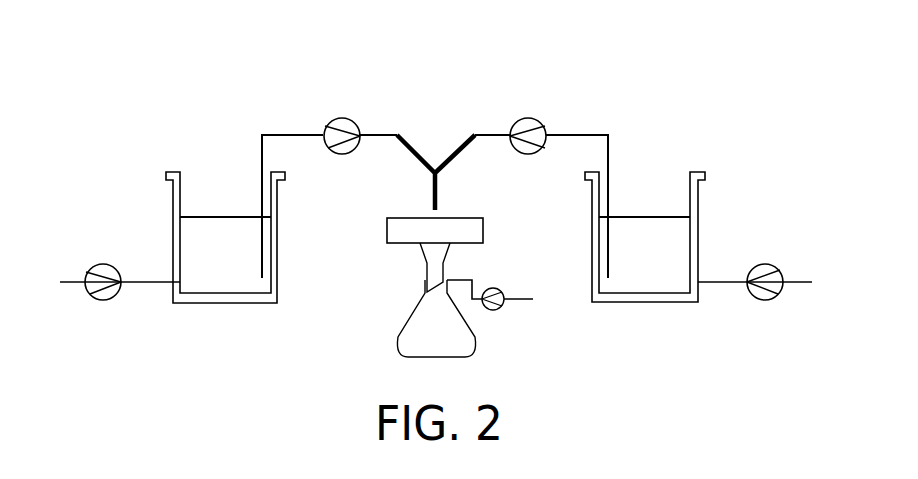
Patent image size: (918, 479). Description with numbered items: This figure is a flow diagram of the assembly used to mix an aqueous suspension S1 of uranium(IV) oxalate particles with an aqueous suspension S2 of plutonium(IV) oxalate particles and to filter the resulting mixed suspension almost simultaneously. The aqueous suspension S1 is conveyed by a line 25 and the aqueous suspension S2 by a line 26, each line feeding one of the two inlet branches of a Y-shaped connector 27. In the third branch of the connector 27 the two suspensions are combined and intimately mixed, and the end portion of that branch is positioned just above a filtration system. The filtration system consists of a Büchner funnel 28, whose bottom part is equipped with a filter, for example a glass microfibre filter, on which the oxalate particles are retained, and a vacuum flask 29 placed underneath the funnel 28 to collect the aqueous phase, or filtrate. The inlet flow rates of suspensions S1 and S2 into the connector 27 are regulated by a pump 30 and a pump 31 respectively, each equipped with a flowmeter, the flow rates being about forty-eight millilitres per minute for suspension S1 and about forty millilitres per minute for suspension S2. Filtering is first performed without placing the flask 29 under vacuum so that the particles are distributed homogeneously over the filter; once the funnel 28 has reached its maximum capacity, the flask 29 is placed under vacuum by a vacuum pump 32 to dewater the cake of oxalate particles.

The line 25 is at (297, 133).
The line 26 is at (577, 132).
The Y-shaped connector 27 is at (440, 185).
The Büchner funnel 28 is at (483, 228).
The vacuum flask 29 is at (400, 327).
The pump 30 is at (352, 117).
The pump 31 is at (528, 117).
The vacuum pump 32 is at (498, 290).
The aqueous suspension of uranium(IV) oxalate particles S1 is at (192, 262).
The aqueous suspension of plutonium(IV) oxalate particles S2 is at (678, 247).